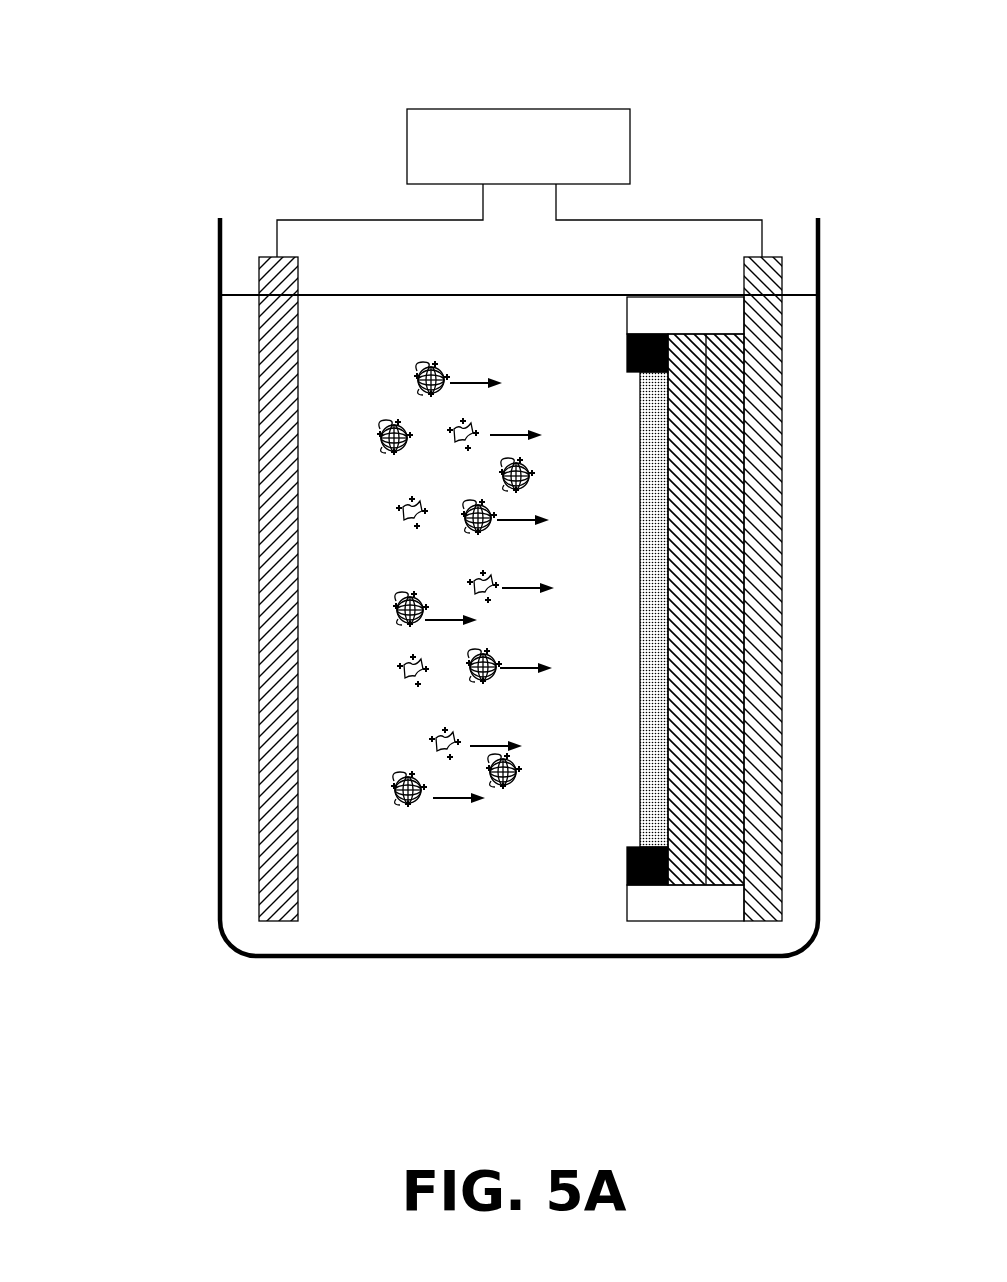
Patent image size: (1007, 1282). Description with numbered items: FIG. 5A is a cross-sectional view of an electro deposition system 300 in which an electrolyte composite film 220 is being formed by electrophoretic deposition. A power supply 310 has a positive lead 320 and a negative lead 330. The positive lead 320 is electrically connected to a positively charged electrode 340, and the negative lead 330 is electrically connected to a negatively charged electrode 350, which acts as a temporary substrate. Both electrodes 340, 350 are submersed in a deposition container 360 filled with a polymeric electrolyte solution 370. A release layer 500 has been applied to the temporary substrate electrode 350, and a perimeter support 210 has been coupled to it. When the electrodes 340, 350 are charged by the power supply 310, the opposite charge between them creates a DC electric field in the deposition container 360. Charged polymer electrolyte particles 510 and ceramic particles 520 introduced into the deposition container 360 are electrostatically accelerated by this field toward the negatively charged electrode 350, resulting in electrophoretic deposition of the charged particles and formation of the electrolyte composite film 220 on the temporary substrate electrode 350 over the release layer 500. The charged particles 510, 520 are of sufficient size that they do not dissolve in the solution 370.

The electro deposition system 300 is at (152, 366).
The power supply 310 is at (557, 108).
The positive lead 320 is at (363, 218).
The negative lead 330 is at (663, 218).
The positively charged electrode 340 is at (259, 678).
The negatively charged electrode 350 is at (782, 680).
The deposition container 360 is at (820, 390).
The polymeric electrolyte solution 370 is at (486, 896).
The perimeter support 210 is at (628, 866).
The electrolyte composite film 220 is at (652, 510).
The release layer 500 is at (668, 610).
The charged polymer electrolyte particles 510 is at (406, 806).
The ceramic particles 520 is at (402, 678).